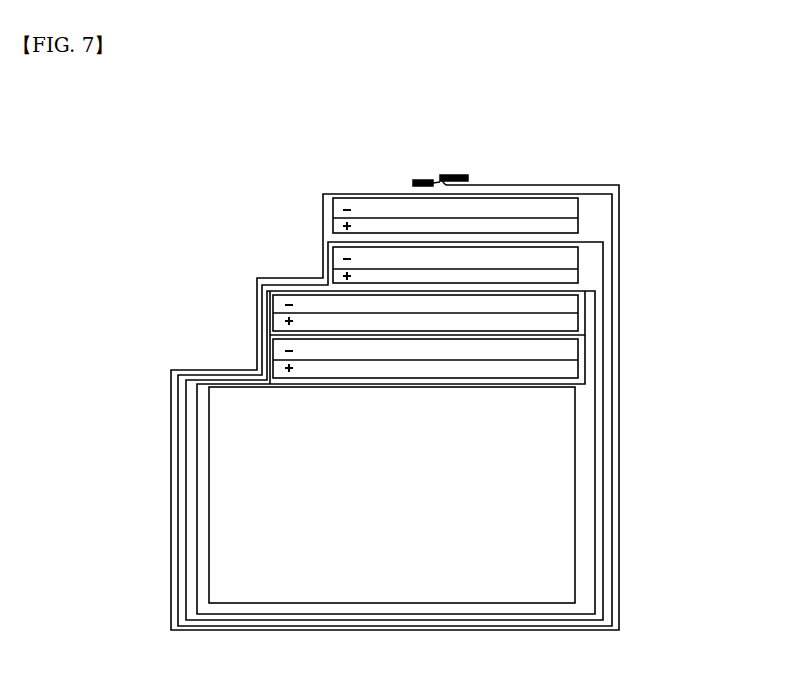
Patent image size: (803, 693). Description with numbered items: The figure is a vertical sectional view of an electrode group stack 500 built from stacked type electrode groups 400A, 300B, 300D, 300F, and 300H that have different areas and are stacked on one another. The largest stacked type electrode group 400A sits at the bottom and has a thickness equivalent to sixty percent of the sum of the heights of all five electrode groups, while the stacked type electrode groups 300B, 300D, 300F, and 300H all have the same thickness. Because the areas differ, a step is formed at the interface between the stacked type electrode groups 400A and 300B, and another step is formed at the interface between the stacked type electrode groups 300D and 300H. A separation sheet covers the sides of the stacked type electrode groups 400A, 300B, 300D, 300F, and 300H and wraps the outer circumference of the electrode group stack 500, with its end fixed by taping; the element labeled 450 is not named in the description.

The electrode group stack 500 is at (50, 146).
The flexible substrate 450 is at (168, 408).
The stacked type electrode group 400A is at (570, 402).
The stacked type electrode group 300H is at (558, 209).
The stacked type electrode group 300F is at (558, 257).
The stacked type electrode group 300D is at (568, 302).
The stacked type electrode group 300B is at (568, 350).